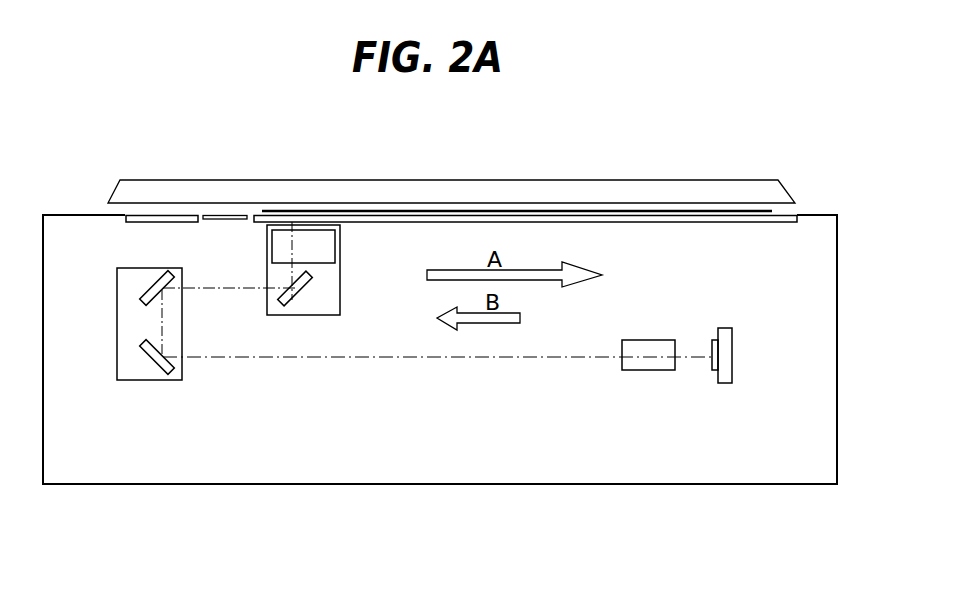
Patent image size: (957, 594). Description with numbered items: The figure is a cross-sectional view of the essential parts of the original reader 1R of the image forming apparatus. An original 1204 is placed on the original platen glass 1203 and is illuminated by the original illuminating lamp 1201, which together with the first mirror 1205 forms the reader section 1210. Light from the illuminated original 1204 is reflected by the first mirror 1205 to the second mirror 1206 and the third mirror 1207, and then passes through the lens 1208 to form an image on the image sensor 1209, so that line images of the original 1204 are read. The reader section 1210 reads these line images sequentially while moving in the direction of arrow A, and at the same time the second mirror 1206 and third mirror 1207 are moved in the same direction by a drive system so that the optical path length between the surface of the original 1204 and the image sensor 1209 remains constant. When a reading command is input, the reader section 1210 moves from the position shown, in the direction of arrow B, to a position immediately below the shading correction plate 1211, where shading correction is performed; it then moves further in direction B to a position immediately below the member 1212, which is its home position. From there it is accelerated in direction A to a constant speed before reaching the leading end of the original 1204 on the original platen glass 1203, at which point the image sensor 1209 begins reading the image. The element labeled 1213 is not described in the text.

The original reader 1R is at (505, 476).
The platen glass 1213 is at (298, 179).
The member 1212 is at (133, 225).
The shading correction plate 1211 is at (235, 223).
The original platen glass 1203 is at (748, 223).
The original 1204 is at (687, 213).
The original illuminating lamp 1201 is at (336, 250).
The first mirror 1205 is at (305, 290).
The reader section 1210 is at (300, 316).
The second mirror 1206 is at (146, 290).
The third mirror 1207 is at (152, 363).
The lens 1208 is at (635, 364).
The image sensor 1209 is at (722, 378).